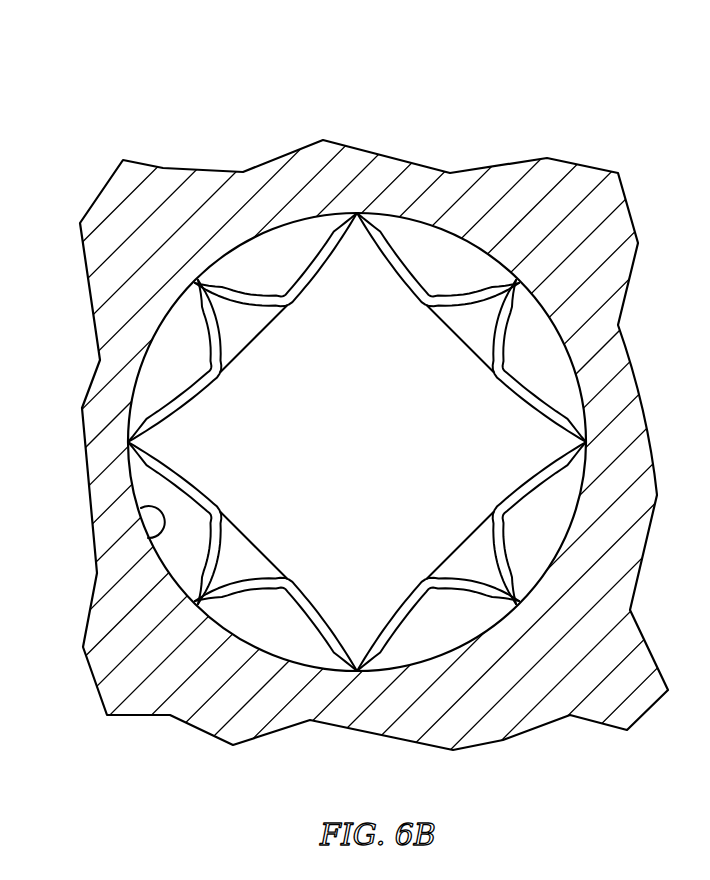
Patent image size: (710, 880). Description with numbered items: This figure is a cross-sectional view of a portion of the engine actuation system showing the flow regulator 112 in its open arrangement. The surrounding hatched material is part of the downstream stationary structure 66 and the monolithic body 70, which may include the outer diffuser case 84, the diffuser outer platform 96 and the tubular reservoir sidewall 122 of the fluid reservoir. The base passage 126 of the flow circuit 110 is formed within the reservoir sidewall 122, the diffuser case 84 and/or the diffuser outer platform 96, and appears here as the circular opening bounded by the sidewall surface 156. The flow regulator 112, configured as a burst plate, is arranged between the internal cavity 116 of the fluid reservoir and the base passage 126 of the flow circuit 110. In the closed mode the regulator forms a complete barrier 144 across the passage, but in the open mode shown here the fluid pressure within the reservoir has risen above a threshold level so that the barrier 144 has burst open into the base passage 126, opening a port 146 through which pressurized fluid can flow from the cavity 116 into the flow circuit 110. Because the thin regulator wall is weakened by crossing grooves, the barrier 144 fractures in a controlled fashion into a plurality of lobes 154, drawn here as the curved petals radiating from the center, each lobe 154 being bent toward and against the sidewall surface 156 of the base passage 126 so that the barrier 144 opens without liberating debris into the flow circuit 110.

The downstream stationary structure 66 is at (622, 63).
The monolithic body 70 is at (578, 103).
The outer diffuser case 84 is at (355, 425).
The outer platform 96 is at (355, 425).
The tubular sidewall 122 is at (243, 172).
The flow regulator 112 is at (460, 238).
The flow circuit 110 is at (430, 643).
The lobes 154 is at (318, 258).
The internal cavity 116 is at (334, 458).
The barrier 144 is at (393, 248).
The base passage 126 is at (522, 365).
The port 146 is at (515, 447).
The sidewall surface 156 is at (148, 540).